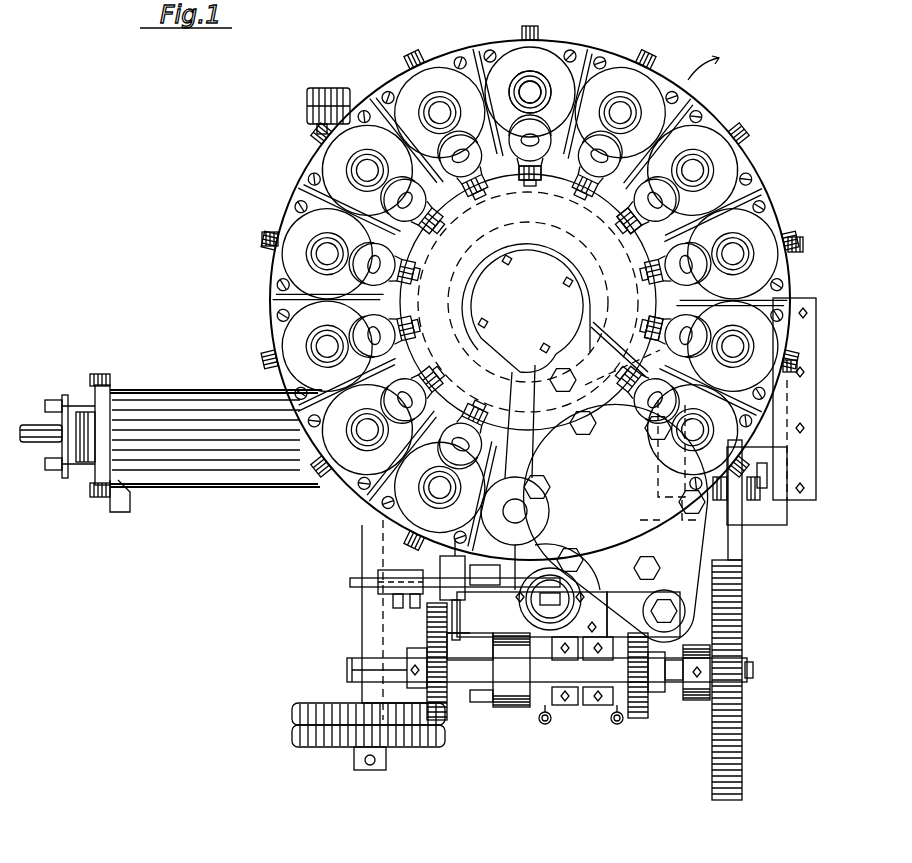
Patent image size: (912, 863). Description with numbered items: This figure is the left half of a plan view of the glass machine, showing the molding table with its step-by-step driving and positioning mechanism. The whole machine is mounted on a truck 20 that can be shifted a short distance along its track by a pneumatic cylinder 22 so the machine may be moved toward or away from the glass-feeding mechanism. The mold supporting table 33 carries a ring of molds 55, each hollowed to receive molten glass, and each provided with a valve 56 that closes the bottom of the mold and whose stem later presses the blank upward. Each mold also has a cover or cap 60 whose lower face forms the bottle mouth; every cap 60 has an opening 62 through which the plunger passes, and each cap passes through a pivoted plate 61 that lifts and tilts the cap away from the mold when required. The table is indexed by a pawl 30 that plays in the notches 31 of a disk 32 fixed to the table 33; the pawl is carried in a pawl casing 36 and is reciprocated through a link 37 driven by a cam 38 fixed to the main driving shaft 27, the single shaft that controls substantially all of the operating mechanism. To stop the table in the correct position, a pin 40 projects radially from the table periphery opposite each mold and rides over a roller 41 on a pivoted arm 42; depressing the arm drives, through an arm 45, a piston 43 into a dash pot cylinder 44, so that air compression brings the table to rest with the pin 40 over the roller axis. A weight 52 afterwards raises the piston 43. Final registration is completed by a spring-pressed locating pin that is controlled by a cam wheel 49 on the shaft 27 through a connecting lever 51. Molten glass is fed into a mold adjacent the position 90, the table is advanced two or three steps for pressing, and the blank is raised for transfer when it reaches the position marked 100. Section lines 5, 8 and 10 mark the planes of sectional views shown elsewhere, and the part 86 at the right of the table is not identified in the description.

The mold 55 is at (547, 62).
The valve 56 is at (535, 92).
The mold supporting table 33 is at (298, 185).
The pin 40 is at (268, 238).
The disk 32 is at (540, 215).
The opening 62 is at (528, 302).
The notches 31 is at (528, 297).
The cover or cap 60 is at (530, 542).
The pawl 30 is at (628, 266).
The pawl casing 36 is at (728, 252).
The arm 45 is at (800, 248).
The transfer position 100 is at (799, 358).
The bracket 86 is at (780, 386).
The plate 61 is at (512, 458).
The roller 41 is at (548, 576).
The dash pot cylinder 44 is at (588, 586).
The piston 43 is at (600, 604).
The section line 5— 5 is at (482, 577).
The section line 8— 8 is at (462, 732).
The pivoted arm 42 is at (483, 636).
The weight 52 is at (408, 602).
The truck 20 is at (370, 636).
The connecting lever 51 is at (466, 668).
The feeding position 90 is at (355, 620).
The pneumatic cylinder 22 is at (214, 490).
The link 37 is at (742, 530).
The cam 38 is at (742, 626).
The main driving shaft 27 is at (747, 672).
The cam wheel 49 is at (442, 706).
The section line 10— 10 is at (531, 745).